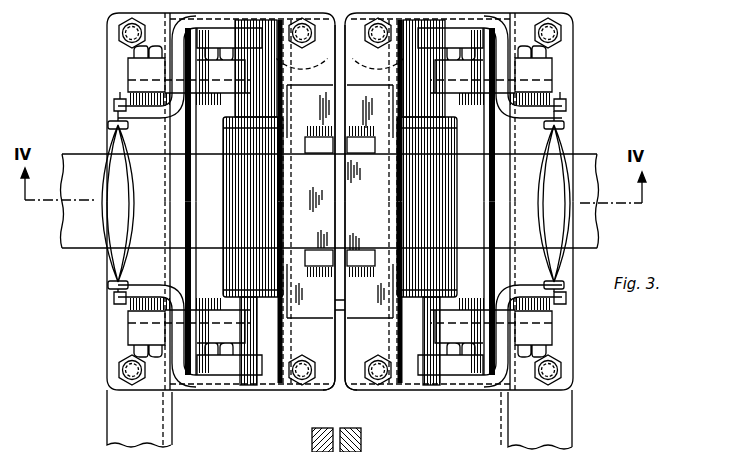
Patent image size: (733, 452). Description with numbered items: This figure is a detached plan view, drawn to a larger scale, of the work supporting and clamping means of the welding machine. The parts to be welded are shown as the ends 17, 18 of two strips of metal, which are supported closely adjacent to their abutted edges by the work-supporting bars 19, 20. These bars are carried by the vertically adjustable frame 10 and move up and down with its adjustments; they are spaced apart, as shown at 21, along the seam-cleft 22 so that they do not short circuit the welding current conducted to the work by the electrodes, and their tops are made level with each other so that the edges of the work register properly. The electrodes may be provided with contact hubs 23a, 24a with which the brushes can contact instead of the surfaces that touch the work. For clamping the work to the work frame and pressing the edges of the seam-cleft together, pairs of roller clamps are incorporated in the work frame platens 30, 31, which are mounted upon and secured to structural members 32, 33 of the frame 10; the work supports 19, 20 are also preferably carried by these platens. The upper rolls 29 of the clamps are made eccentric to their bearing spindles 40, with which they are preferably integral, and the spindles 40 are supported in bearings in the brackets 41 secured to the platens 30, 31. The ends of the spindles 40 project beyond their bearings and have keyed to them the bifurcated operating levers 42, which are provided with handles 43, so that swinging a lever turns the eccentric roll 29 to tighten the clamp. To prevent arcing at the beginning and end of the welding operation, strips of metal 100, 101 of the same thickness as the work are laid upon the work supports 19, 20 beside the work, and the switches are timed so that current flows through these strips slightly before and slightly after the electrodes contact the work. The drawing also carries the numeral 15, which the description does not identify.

The vertically adjustable frame 10 is at (100, 340).
The mounting plate 15 is at (112, 425).
The end of strip of metal 17 is at (62, 222).
The end of strip of metal 18 is at (597, 214).
The work-supporting bar 19 is at (310, 119).
The work-supporting bar 20 is at (370, 119).
The space between work-supporting bars 21 is at (344, 302).
The seam-cleft 22 is at (340, 182).
The contact hub of electrode 23a is at (308, 440).
The contact hub of electrode 24a is at (367, 440).
The eccentric roll 29 is at (291, 266).
The work frame platen 30 is at (118, 96).
The work frame platen 31 is at (560, 96).
The structural member of frame 32 is at (337, 387).
The structural member of frame 33 is at (341, 24).
The bearing spindle 40 is at (327, 57).
The bracket 41 is at (128, 62).
The bifurcated operating lever 42 is at (220, 378).
The handle 43 is at (106, 228).
The strip of metal 100 is at (317, 248).
The strip of metal 101 is at (331, 155).